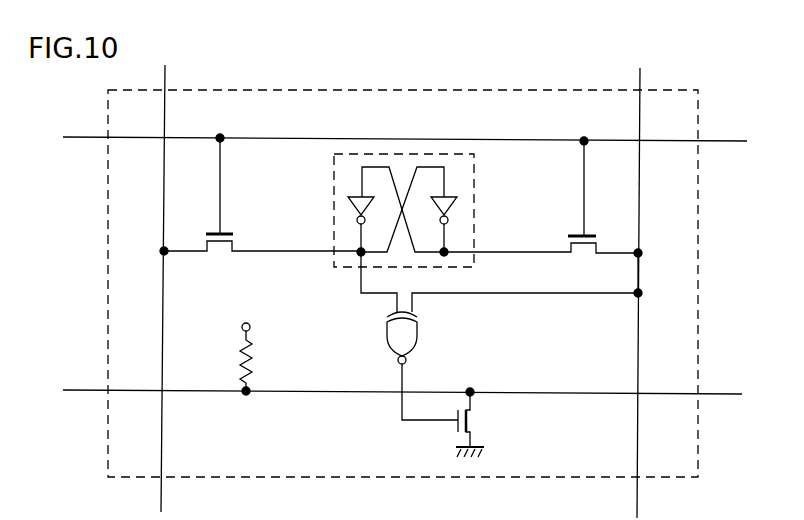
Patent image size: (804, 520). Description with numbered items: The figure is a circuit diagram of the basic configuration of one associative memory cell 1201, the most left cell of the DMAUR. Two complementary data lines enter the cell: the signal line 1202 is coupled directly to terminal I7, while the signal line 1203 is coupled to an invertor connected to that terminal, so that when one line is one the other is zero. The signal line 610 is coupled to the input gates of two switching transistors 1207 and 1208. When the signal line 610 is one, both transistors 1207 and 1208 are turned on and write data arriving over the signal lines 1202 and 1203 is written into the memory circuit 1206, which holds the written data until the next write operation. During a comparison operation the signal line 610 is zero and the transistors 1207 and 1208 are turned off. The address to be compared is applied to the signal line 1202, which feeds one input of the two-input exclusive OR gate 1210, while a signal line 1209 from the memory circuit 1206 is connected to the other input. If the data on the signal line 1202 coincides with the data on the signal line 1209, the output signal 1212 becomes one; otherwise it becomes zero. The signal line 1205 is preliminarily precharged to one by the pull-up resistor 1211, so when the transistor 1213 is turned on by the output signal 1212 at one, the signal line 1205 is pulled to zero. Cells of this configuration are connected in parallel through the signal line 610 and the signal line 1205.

The memory cell 1201 is at (403, 89).
The signal line 1202 is at (642, 83).
The signal line 1203 is at (167, 81).
The signal line 1205 is at (572, 380).
The memory circuit 1206 is at (476, 181).
The switching transistor 1207 is at (566, 236).
The switching transistor 1208 is at (236, 234).
The signal line 1209 is at (356, 292).
The two-input exclusive OR gate 1210 is at (418, 329).
The pull-up resistor 1211 is at (254, 363).
The output signal 1212 is at (405, 422).
The transistor 1213 is at (472, 423).
The signal line 610 is at (455, 139).